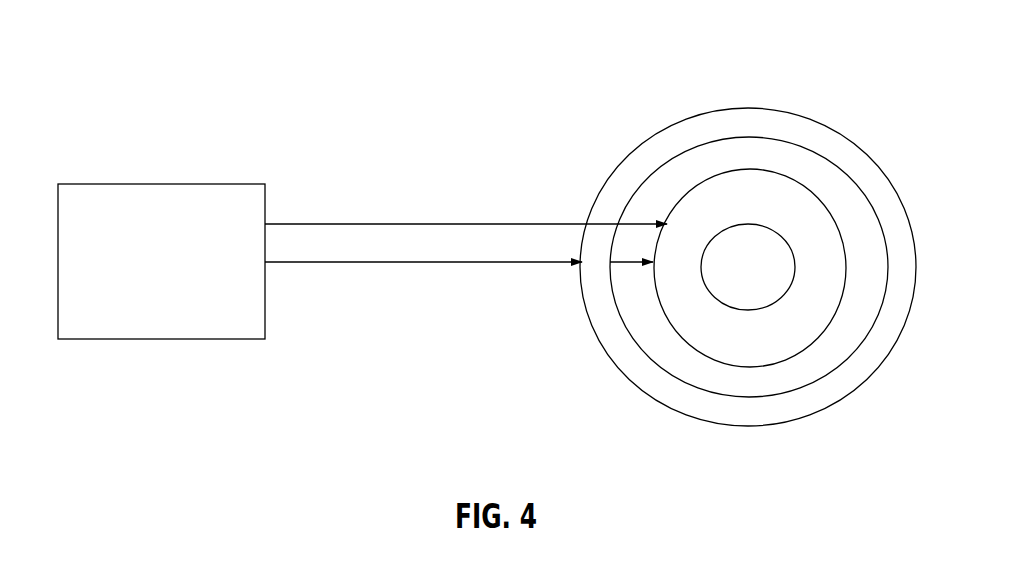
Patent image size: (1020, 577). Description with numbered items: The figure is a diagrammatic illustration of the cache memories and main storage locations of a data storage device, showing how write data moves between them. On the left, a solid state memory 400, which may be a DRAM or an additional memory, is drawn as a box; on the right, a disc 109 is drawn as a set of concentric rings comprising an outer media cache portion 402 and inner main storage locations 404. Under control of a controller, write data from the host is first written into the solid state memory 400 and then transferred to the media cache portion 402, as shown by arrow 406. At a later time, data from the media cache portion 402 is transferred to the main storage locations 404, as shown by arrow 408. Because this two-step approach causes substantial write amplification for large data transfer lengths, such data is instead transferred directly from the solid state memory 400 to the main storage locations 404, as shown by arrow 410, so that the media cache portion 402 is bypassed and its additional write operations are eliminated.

The disc 109 is at (725, 273).
The solid state memory 400 is at (125, 183).
The media cache portion 402 is at (663, 397).
The main storage locations 404 is at (790, 330).
The arrow 406 is at (417, 264).
The arrow 408 is at (631, 264).
The arrow 410 is at (483, 222).